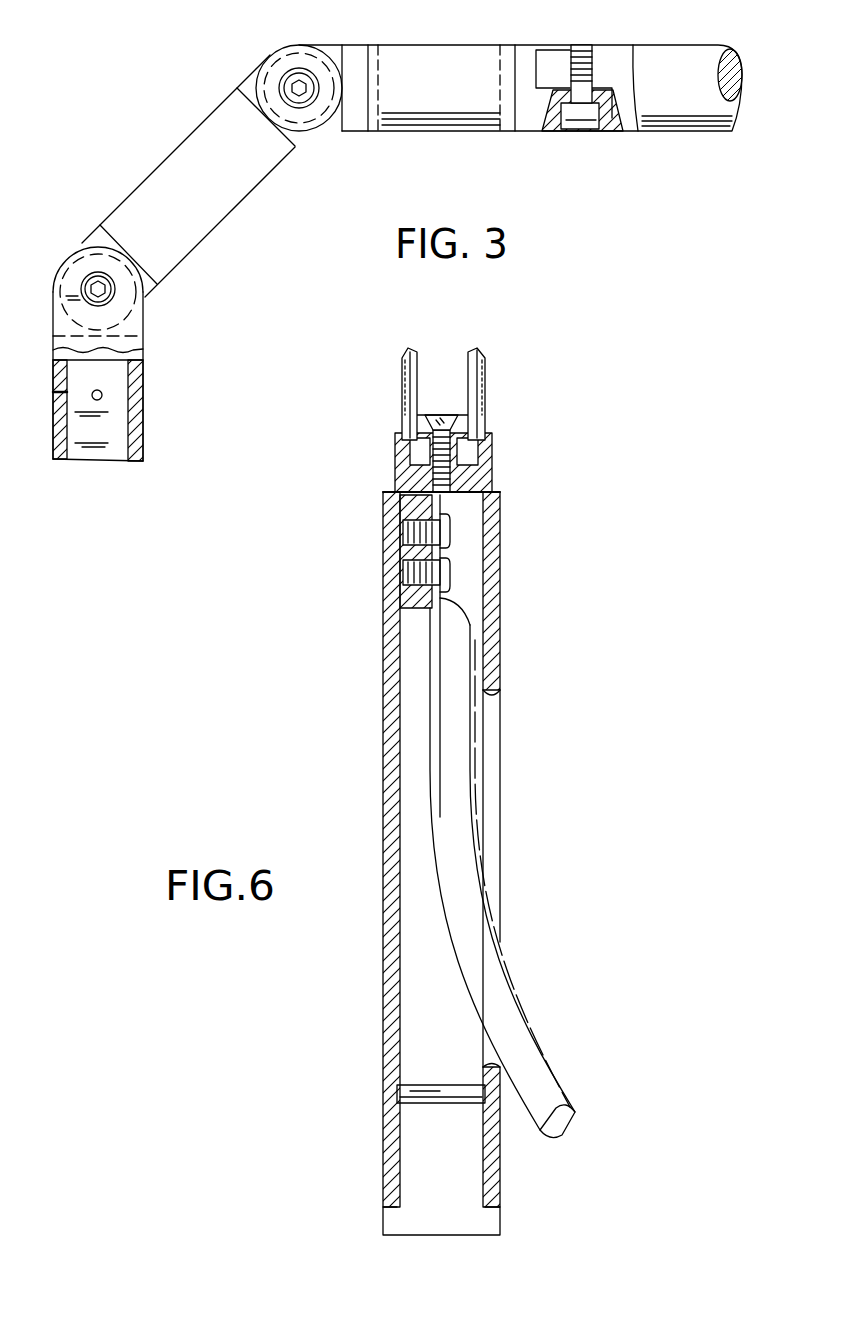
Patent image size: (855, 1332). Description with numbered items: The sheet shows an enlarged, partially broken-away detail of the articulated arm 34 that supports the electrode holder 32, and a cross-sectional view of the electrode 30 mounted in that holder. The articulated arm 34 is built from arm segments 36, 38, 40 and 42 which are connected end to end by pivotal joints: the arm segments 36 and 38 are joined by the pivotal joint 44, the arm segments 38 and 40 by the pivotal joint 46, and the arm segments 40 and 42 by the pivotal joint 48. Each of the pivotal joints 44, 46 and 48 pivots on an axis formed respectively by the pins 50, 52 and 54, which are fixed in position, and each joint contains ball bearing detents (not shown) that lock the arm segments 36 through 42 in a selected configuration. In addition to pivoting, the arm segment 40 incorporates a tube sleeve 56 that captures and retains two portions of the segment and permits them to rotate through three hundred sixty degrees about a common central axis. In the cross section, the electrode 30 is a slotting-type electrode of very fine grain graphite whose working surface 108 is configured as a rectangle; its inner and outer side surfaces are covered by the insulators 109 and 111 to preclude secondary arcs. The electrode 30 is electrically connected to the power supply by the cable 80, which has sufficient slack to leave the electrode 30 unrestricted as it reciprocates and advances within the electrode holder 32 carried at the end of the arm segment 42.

In FIG. 6, the electrode 30 is at (455, 375).
In FIG. 6, the electrode holder 32 is at (507, 458).
In FIG. 3, the articulated arm 34 is at (188, 176).
In FIG. 3, the arm segment 36 is at (143, 404).
In FIG. 3, the arm segment 38 is at (235, 188).
In FIG. 3, the arm segment 40 is at (519, 117).
In FIG. 3, the arm segment 42 is at (651, 62).
In FIG. 6, the arm segment 42 is at (383, 752).
In FIG. 3, the pivotal joint 44 is at (118, 300).
In FIG. 3, the pivotal joint 46 is at (318, 84).
In FIG. 3, the pivotal joint 48 is at (583, 45).
In FIG. 3, the pin 50 is at (95, 282).
In FIG. 3, the pin 52 is at (296, 78).
In FIG. 3, the pin 54 is at (583, 113).
In FIG. 3, the tube sleeve 56 is at (403, 117).
In FIG. 6, the cable 80 is at (467, 848).
In FIG. 6, the working surface 108 is at (418, 326).
In FIG. 6, the insulator 109 is at (418, 388).
In FIG. 6, the insulator 111 is at (402, 378).